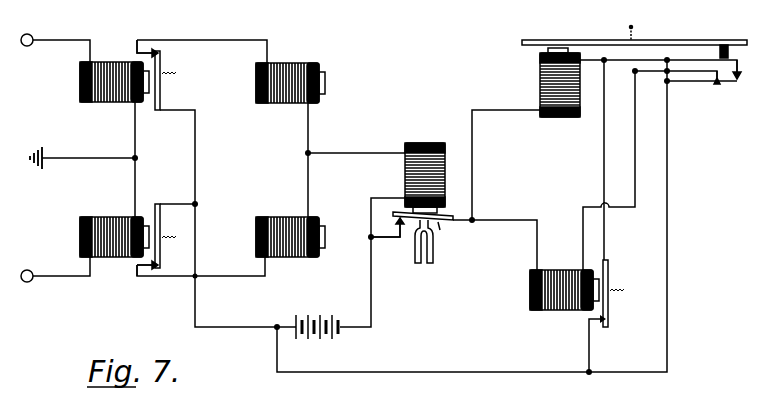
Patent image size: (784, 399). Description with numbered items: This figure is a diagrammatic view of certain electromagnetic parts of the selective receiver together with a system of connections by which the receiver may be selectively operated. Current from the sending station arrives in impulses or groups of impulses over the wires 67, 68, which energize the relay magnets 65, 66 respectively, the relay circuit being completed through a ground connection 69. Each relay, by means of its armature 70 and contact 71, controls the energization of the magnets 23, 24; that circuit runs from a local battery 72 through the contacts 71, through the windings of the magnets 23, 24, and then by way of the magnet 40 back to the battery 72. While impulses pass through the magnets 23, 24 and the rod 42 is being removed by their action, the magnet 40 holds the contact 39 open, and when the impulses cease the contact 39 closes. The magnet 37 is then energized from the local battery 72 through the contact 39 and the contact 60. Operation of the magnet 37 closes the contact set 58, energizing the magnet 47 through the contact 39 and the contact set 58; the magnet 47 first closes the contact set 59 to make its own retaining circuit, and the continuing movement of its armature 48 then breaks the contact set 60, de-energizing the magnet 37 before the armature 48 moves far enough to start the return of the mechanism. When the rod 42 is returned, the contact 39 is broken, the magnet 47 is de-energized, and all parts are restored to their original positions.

The wire 68 is at (48, 41).
The wire 67 is at (58, 279).
The ground connection 69 is at (65, 158).
The relay magnet 66 is at (108, 103).
The relay magnet 65 is at (107, 217).
The magnet 24 is at (290, 63).
The magnet 23 is at (280, 217).
The magnet 37 is at (530, 297).
The magnet 40 is at (405, 172).
The magnet 47 is at (540, 80).
The armature 70 is at (161, 222).
The contact 71 is at (158, 266).
The local battery 72 is at (325, 318).
The contact 39 is at (400, 228).
The rod 42 is at (433, 252).
The armature 48 is at (665, 40).
The contact set 58 is at (597, 322).
The contact set 59 is at (744, 72).
The contact 60 is at (714, 82).